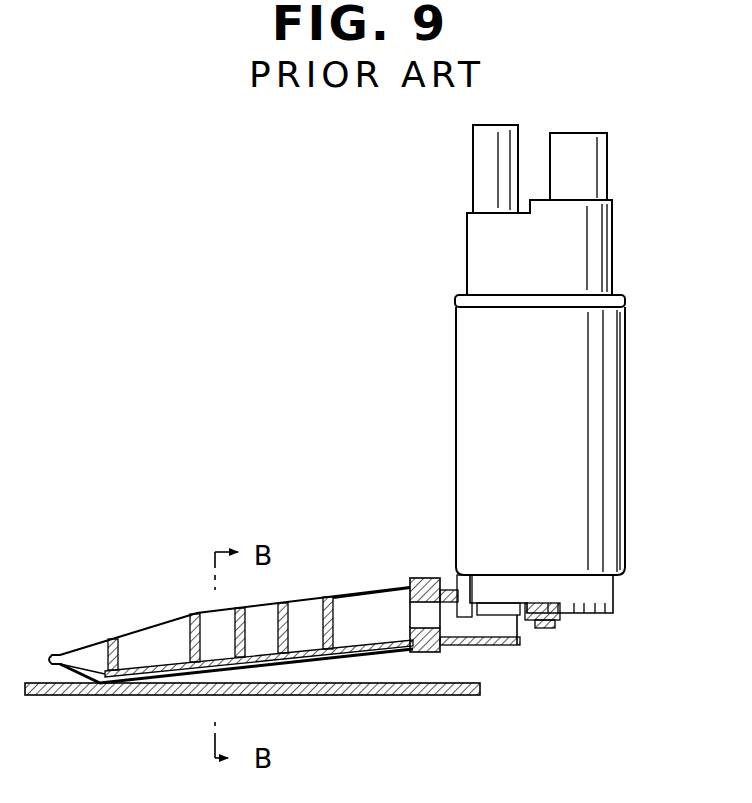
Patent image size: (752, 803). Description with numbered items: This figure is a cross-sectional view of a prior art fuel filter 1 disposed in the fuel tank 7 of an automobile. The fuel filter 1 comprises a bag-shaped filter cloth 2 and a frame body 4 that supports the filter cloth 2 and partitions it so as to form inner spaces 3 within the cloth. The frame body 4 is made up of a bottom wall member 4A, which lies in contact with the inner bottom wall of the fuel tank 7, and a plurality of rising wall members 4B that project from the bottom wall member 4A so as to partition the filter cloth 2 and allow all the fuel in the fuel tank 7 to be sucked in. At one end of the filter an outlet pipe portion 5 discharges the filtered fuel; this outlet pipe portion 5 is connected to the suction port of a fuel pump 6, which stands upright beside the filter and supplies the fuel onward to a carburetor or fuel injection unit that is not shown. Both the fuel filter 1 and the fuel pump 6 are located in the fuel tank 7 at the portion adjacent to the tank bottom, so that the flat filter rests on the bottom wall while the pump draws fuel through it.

The fuel filter 1 is at (300, 593).
The filter cloth 2 is at (353, 597).
The inner spaces 3 is at (262, 643).
The frame body 4 is at (187, 635).
The bottom wall member 4A is at (365, 653).
The rising wall members 4B is at (233, 632).
The outlet pipe portion 5 is at (513, 645).
The fuel pump 6 is at (620, 425).
The fuel tank 7 is at (368, 696).